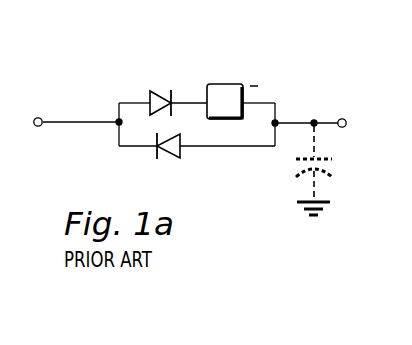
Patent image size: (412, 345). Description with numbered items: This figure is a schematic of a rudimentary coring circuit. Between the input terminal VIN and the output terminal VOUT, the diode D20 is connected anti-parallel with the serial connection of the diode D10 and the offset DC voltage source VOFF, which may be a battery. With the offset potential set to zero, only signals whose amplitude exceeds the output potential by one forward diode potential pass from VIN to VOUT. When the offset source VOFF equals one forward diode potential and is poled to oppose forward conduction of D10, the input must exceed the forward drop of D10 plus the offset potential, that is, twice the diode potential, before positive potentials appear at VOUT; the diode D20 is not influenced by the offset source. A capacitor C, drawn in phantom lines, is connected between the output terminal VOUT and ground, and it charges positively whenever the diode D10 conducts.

The input terminal VIN is at (31, 107).
The output terminal VOUT is at (357, 111).
The diode D10 is at (154, 93).
The diode D20 is at (174, 160).
The offset DC voltage source VOFF is at (222, 85).
The capacitor C is at (321, 170).